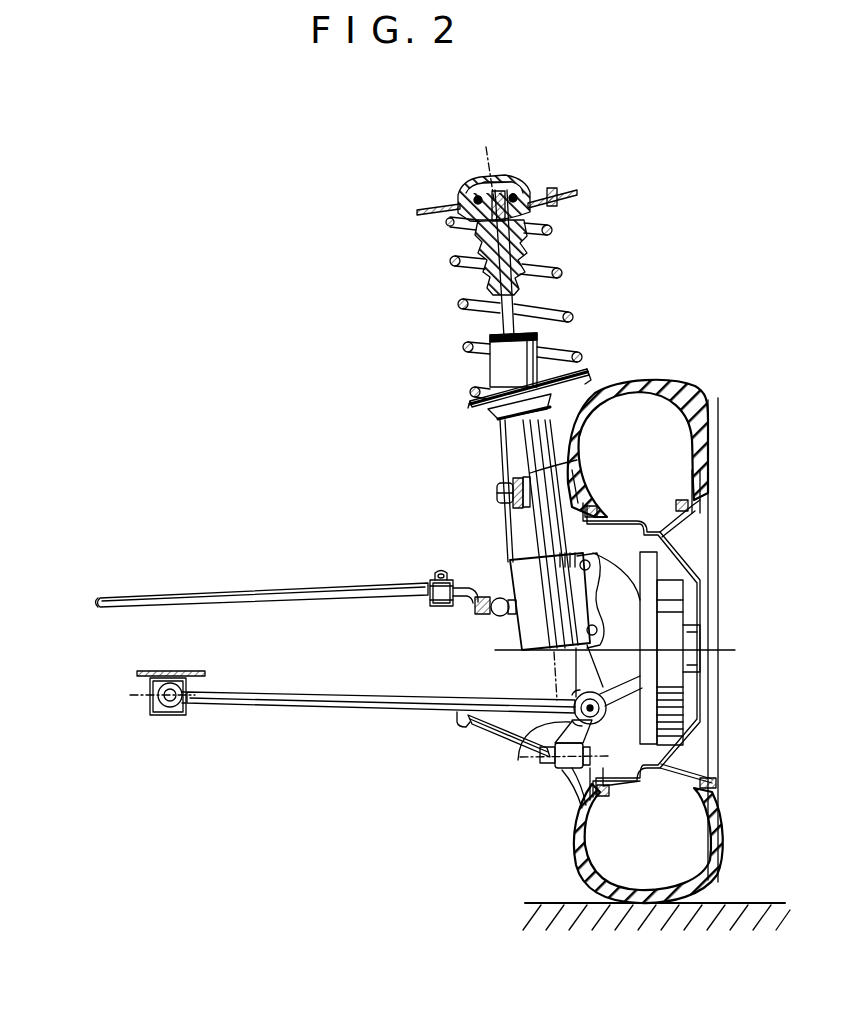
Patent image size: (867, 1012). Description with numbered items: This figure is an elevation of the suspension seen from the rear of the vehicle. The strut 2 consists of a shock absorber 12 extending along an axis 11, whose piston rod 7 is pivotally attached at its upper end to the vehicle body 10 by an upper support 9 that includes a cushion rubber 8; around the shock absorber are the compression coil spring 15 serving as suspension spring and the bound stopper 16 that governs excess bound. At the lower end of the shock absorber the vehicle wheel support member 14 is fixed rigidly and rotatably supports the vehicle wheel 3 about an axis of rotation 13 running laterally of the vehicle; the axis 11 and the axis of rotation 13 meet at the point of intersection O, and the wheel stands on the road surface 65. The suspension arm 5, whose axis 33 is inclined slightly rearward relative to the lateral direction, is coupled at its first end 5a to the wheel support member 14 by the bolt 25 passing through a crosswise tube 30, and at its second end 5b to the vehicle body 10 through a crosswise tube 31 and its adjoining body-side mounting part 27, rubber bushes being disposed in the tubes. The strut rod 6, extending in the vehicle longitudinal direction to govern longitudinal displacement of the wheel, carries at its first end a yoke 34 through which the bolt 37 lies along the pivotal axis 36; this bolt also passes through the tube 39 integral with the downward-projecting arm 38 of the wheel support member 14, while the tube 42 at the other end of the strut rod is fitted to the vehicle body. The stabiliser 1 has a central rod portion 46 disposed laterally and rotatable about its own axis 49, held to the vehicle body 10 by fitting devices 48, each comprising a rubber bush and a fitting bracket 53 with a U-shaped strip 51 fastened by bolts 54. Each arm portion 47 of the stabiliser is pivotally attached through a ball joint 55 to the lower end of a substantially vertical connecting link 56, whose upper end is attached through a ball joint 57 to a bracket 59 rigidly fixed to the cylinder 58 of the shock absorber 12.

The stabiliser 1 is at (293, 584).
The strut 2 is at (589, 365).
The vehicle wheel 3 is at (646, 388).
The suspension arm 5 is at (333, 712).
The first end of suspension arm 5a is at (567, 704).
The second end of suspension arm 5b is at (200, 703).
The strut rod 6 is at (505, 729).
The piston rod 7 is at (543, 299).
The cushion rubber 8 is at (470, 203).
The upper support 9 is at (537, 182).
The vehicle body 10 is at (568, 191).
The axis 11 is at (492, 162).
The shock absorber 12 is at (496, 448).
The axis of rotation 13 is at (727, 650).
The vehicle wheel support member 14 is at (685, 688).
The compression coil spring 15 is at (553, 229).
The bound stopper 16 is at (470, 245).
The bolt 25 is at (599, 712).
The bushing housing 27 is at (155, 716).
The tube 30 is at (603, 698).
The tube 31 is at (175, 704).
The axis of suspension arm 33 is at (136, 700).
The yoke 34 is at (575, 776).
The pivotal axis 36 is at (563, 770).
The bolt 37 is at (593, 756).
The arm 38 is at (535, 759).
The tube 39 is at (585, 792).
The tube 42 is at (470, 722).
The central rod portion 46 is at (205, 596).
The arm portion 47 is at (472, 612).
The fitting device 48 is at (426, 582).
The axis 49 is at (93, 601).
The U-shaped strip 51 is at (438, 606).
The fitting bracket 53 is at (438, 575).
The bolt 54 is at (440, 575).
The ball joint 55 is at (500, 616).
The connecting link 56 is at (506, 556).
The ball joint 57 is at (497, 492).
The cylinder 58 is at (548, 537).
The bracket 59 is at (548, 471).
The road surface 65 is at (770, 903).
The point of intersection O is at (555, 652).